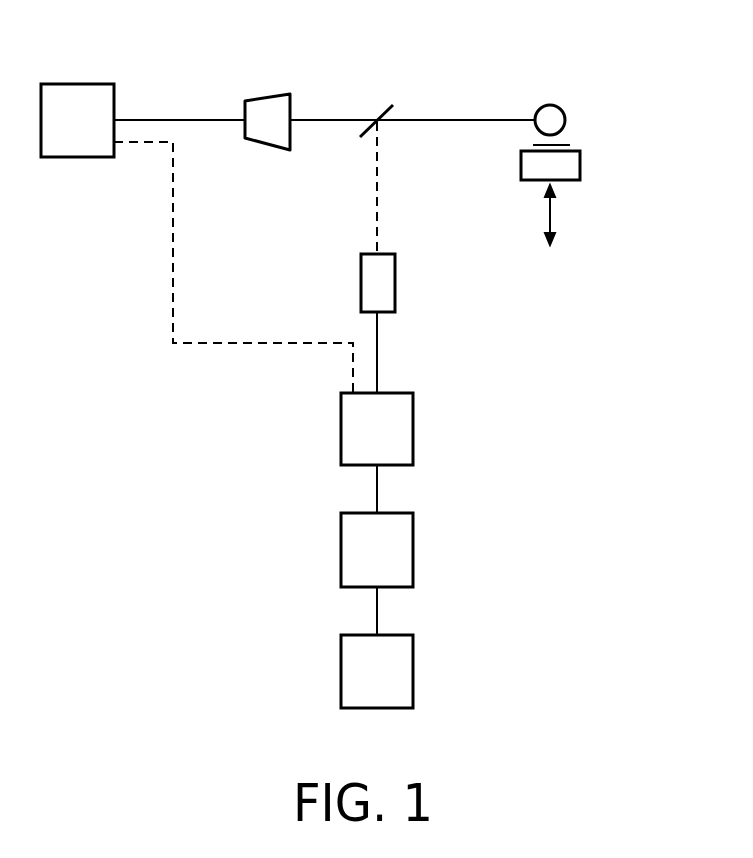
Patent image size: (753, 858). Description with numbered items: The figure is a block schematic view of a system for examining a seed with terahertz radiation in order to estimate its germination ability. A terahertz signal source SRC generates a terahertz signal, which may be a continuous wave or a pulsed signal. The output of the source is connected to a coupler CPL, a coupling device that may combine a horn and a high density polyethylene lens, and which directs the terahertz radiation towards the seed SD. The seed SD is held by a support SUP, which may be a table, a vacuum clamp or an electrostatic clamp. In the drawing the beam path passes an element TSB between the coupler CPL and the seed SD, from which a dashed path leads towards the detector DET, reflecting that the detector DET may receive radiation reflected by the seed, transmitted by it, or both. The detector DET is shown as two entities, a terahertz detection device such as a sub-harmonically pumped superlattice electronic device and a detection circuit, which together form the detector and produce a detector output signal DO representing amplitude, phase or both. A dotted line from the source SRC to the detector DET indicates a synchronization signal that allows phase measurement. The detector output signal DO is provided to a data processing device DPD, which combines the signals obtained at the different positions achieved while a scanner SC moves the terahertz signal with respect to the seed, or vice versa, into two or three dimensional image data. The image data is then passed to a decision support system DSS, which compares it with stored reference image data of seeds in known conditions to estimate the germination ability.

The terahertz signal source SRC is at (76, 84).
The coupler CPL is at (272, 98).
The beam splitter TSB is at (420, 120).
The seed SD is at (550, 104).
The support SUP is at (574, 145).
The scanner SC is at (580, 165).
The detector DET is at (395, 300).
The detector output signal DO is at (377, 490).
The data processing device DPD is at (413, 550).
The decision support system DSS is at (413, 670).